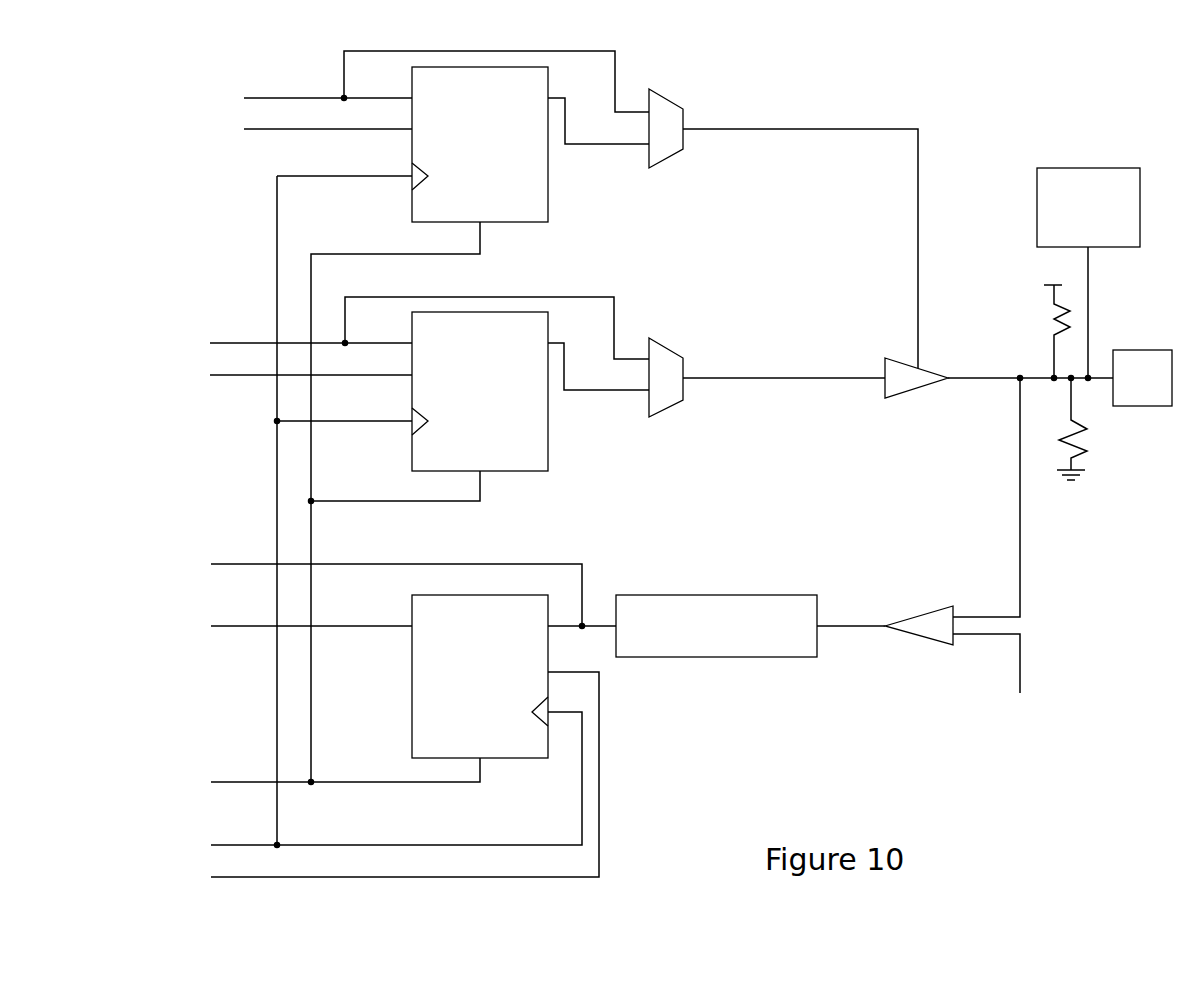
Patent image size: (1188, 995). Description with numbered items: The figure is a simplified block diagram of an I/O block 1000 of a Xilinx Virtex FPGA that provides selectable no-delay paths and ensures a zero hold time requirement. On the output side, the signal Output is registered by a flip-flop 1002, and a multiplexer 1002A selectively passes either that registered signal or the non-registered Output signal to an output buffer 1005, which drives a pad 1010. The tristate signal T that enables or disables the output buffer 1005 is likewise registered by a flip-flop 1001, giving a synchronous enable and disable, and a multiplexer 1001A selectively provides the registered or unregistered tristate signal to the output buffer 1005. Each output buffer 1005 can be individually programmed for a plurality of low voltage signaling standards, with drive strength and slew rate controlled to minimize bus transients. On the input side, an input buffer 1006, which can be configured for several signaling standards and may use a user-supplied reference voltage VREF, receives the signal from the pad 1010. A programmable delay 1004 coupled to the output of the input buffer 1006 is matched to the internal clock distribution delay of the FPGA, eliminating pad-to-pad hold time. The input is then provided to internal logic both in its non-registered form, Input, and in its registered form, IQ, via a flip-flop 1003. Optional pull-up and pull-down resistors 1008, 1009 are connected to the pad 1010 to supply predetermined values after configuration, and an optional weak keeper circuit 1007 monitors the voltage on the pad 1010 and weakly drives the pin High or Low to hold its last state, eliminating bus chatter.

The I/O block 1000 is at (817, 97).
The flip-flop 1001 is at (480, 144).
The multiplexer 1001A is at (672, 155).
The flip-flop 1002 is at (480, 391).
The multiplexer 1002A is at (672, 404).
The flip-flop 1003 is at (480, 676).
The programmable delay 1004 is at (716, 626).
The output buffer 1005 is at (890, 344).
The input buffer 1006 is at (916, 596).
The weak keeper circuit 1007 is at (1088, 207).
The pull-up resistor 1008 is at (1035, 331).
The pull-down resistor 1009 is at (1094, 429).
The pad 1010 is at (1142, 378).